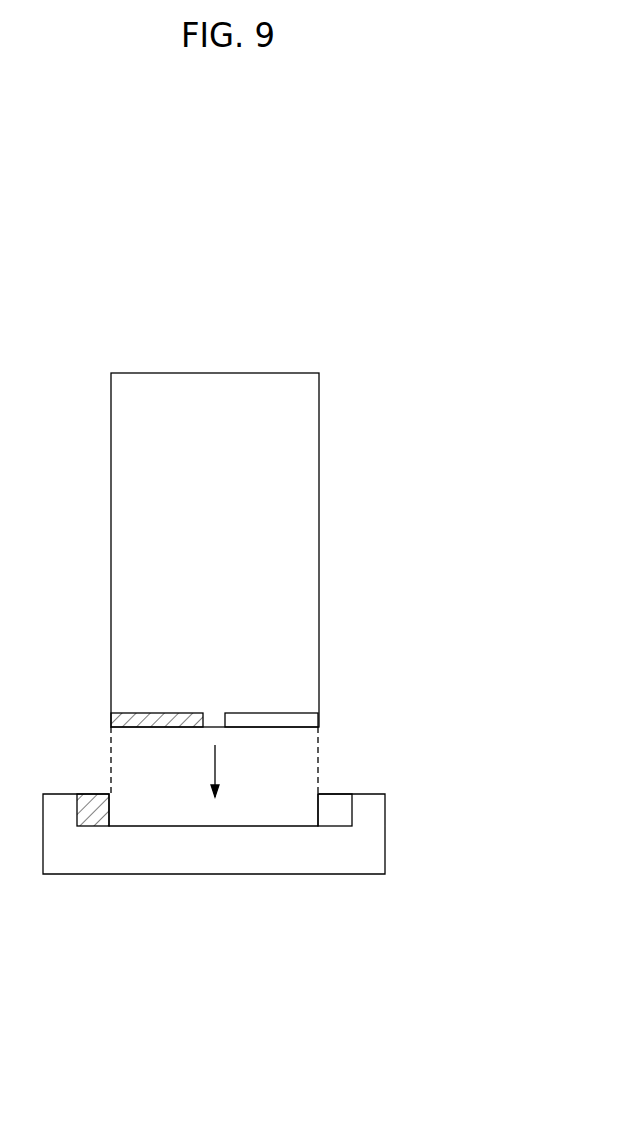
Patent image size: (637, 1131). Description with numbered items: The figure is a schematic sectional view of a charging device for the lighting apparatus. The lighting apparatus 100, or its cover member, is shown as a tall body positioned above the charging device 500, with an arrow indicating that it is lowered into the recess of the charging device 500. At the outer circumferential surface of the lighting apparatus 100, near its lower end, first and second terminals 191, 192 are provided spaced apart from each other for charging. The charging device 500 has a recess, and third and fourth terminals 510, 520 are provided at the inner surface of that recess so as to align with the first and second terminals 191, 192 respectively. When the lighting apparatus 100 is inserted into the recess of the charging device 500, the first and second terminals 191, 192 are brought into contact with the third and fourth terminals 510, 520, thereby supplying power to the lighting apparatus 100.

The lighting apparatus 100 is at (335, 488).
The first terminal 191 is at (111, 720).
The second terminal 192 is at (318, 723).
The charging device 500 is at (400, 833).
The third terminal 510 is at (96, 818).
The fourth terminal 520 is at (336, 817).